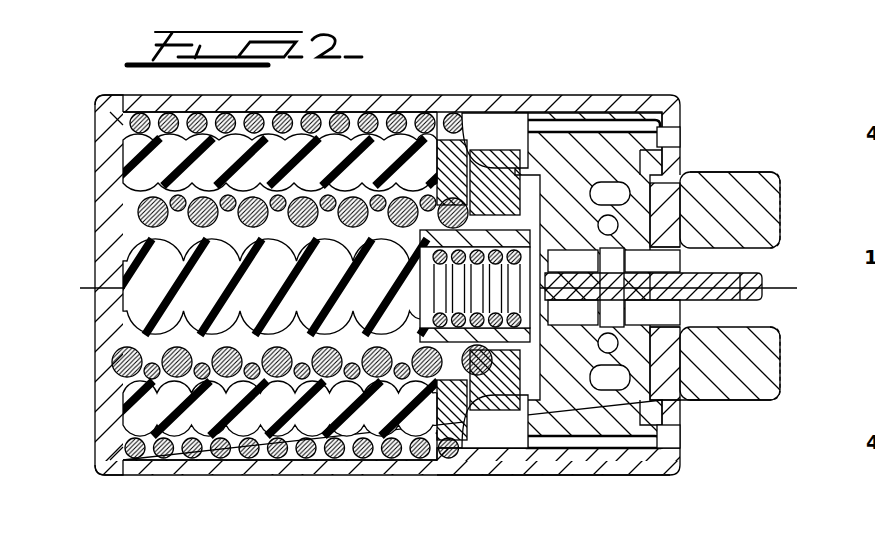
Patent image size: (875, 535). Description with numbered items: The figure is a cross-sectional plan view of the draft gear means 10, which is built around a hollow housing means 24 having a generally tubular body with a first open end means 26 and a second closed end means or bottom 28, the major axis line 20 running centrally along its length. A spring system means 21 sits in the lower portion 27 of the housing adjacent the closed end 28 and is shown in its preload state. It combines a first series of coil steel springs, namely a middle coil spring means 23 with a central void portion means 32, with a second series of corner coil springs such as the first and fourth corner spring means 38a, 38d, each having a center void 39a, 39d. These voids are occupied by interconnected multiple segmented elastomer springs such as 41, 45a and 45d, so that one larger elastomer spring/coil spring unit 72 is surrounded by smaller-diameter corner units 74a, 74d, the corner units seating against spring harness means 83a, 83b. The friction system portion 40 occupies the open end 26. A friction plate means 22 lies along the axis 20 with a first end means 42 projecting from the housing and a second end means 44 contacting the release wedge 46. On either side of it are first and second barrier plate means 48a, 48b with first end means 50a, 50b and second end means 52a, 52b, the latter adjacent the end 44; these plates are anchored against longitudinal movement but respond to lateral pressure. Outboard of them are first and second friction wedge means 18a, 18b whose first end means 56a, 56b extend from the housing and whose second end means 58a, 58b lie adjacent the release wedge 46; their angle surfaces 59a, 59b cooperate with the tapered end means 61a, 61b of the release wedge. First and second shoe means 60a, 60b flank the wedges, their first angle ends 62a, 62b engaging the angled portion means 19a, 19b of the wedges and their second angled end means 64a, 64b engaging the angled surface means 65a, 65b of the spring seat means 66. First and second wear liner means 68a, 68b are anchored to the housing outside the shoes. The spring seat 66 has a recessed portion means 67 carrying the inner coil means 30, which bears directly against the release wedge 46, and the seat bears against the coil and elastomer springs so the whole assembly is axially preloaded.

The draft gear means 10 is at (550, 82).
The first friction wedge means 18a is at (782, 215).
The second friction wedge means 18b is at (782, 350).
The angled portion means 19a is at (700, 173).
The angled portion means 19b is at (730, 374).
The major axis line 20 is at (441, 286).
The spring system means 21 is at (255, 447).
The friction plate means 22 is at (770, 273).
The middle coil spring means 23 is at (125, 210).
The hollow housing means 24 is at (622, 475).
The first open end means 26 is at (704, 404).
The lower portion 27 is at (268, 117).
The second closed end means 28 is at (102, 318).
The inner coil means 30 is at (412, 250).
The central void portion means 32 is at (125, 358).
The first corner spring means 38a is at (148, 116).
The fourth corner spring means 38d is at (160, 458).
The first center void 39a is at (240, 125).
The fourth center void 39d is at (222, 458).
The friction system portion 40 is at (714, 156).
The elastomer spring means 41 is at (125, 266).
The first end means 42 is at (770, 300).
The second end means 44 is at (613, 287).
The elastomer spring means 45a is at (135, 150).
The elastomer spring means 45d is at (135, 415).
The release wedge 46 is at (426, 321).
The first barrier plate means 48a is at (682, 262).
The second barrier plate means 48b is at (682, 312).
The first end means 50a is at (636, 271).
The first end means 50b is at (638, 320).
The second end means 52a is at (560, 271).
The second end means 52b is at (558, 320).
The first end means 56a is at (775, 190).
The first end means 56b is at (785, 375).
The second end means 58a is at (614, 222).
The second end means 58b is at (616, 346).
The angle surface 59a is at (600, 190).
The angle surface 59b is at (600, 390).
The first shoe means 60a is at (682, 165).
The second shoe means 60b is at (690, 425).
The first tapered end means 61a is at (501, 182).
The second tapered end means 61b is at (486, 395).
The first angle end 62a is at (668, 128).
The first angle end 62b is at (660, 428).
The second angled end means 64a is at (585, 123).
The second angled end means 64b is at (548, 414).
The angled surface means 65a is at (506, 165).
The angled surface means 65b is at (492, 420).
The spring seat means 66 is at (478, 165).
The recessed portion means 67 is at (432, 290).
The first wear liner means 68a is at (648, 165).
The second wear liner means 68b is at (684, 455).
The elastomer spring/coil spring unit 72 is at (125, 235).
The corner unit 74a is at (118, 133).
The corner unit 74d is at (118, 442).
The spring harness means 83a is at (455, 122).
The spring harness means 83b is at (450, 455).